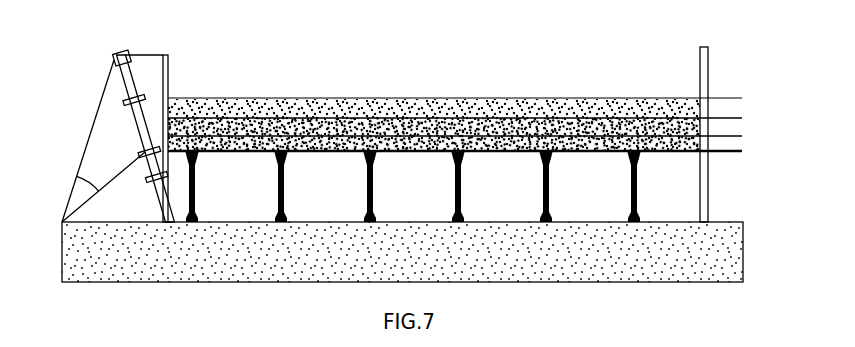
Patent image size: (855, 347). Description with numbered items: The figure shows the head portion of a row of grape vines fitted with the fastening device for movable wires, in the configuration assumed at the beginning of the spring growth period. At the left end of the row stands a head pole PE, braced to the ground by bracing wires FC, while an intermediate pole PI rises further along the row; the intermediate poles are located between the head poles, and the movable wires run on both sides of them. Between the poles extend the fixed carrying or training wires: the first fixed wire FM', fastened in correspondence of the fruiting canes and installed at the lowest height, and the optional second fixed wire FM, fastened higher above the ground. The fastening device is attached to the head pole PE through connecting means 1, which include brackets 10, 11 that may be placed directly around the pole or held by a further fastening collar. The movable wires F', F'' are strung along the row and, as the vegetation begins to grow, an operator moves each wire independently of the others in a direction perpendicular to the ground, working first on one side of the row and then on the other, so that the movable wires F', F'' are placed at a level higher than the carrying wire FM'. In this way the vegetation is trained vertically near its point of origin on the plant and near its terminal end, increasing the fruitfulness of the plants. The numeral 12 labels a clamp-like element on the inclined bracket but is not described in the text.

The connecting means 1 is at (172, 74).
The bracket 10 is at (139, 121).
The bracket 11 is at (158, 52).
The clamp 12 is at (148, 180).
The head pole PE is at (113, 52).
The intermediate pole PI is at (708, 48).
The bracing wire FC is at (94, 120).
The second fixed wire FM is at (475, 85).
The movable wire F'' is at (475, 112).
The movable wire F' is at (480, 144).
The first fixed wire FM' is at (473, 175).